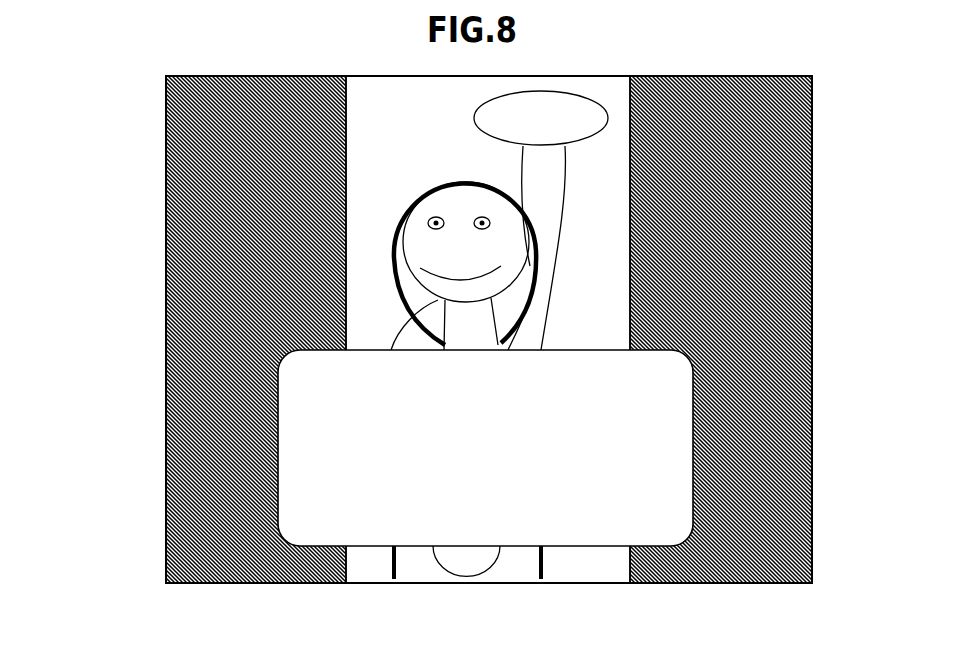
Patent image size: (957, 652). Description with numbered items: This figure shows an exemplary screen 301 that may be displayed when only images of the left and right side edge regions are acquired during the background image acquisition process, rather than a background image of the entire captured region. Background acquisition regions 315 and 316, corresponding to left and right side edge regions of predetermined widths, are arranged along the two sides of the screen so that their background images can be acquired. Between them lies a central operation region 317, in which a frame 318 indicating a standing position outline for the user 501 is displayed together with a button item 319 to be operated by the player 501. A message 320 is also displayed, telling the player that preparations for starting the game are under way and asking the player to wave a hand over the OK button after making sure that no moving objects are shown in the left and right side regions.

The display screen 301 is at (128, 116).
The background acquisition region 315 is at (175, 530).
The background acquisition region 316 is at (773, 523).
The central operation region 317 is at (578, 560).
The frame 318 is at (387, 285).
The button item 319 is at (564, 83).
The message 320 is at (686, 446).
The user 501 is at (457, 563).